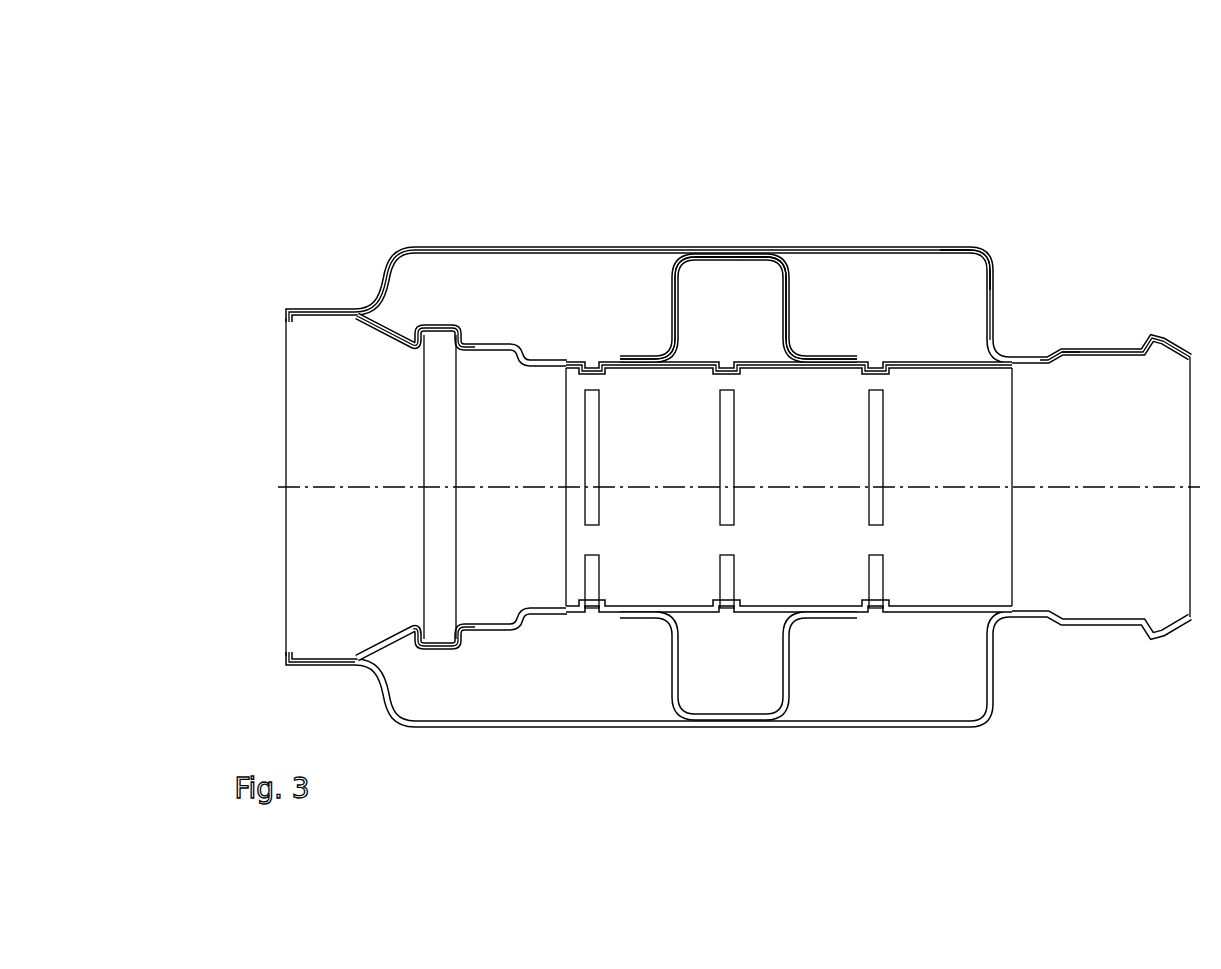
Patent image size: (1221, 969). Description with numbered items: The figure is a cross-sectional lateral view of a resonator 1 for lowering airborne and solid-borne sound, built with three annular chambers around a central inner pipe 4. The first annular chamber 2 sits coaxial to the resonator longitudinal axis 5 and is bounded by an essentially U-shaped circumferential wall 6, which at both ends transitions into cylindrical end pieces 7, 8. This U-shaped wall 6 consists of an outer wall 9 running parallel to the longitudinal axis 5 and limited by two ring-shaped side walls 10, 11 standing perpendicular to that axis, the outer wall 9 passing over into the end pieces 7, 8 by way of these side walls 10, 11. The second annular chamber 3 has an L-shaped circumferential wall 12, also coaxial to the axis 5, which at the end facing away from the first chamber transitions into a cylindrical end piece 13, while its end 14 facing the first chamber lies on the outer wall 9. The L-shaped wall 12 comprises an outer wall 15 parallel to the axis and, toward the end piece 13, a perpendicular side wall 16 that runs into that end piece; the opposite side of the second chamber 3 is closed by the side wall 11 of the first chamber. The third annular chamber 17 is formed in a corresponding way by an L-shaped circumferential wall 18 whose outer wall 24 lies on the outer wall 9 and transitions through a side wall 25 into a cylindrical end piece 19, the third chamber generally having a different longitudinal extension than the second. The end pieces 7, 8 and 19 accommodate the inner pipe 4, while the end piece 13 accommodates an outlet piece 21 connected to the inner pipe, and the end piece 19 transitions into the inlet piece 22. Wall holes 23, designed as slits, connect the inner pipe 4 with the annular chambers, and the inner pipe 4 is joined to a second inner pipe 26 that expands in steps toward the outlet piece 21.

The resonator 1 is at (279, 148).
The first annular chamber 2 is at (723, 302).
The second annular chamber 3 is at (527, 298).
The inner pipe 4 is at (910, 366).
The resonator longitudinal axis 5 is at (325, 487).
The U-shaped circumferential wall 6 is at (778, 253).
The cylindrical end piece 7 is at (834, 357).
The cylindrical end piece 8 is at (633, 358).
The outer wall 9 is at (753, 252).
The side wall 10 is at (788, 303).
The side wall 11 is at (704, 248).
The L-shaped circumferential wall 12 is at (397, 251).
The cylindrical end piece 13 is at (328, 309).
The end 14 is at (698, 247).
The outer wall 15 is at (498, 248).
The side wall 16 is at (382, 284).
The third annular chamber 17 is at (888, 293).
The L-shaped circumferential wall 18 is at (988, 250).
The cylindrical end piece 19 is at (1022, 360).
The outlet piece 21 is at (292, 655).
The inlet piece 22 is at (1117, 350).
The wall holes 23 is at (592, 498).
The outer wall 24 is at (950, 248).
The side wall 25 is at (993, 306).
The second inner pipe 26 is at (477, 342).